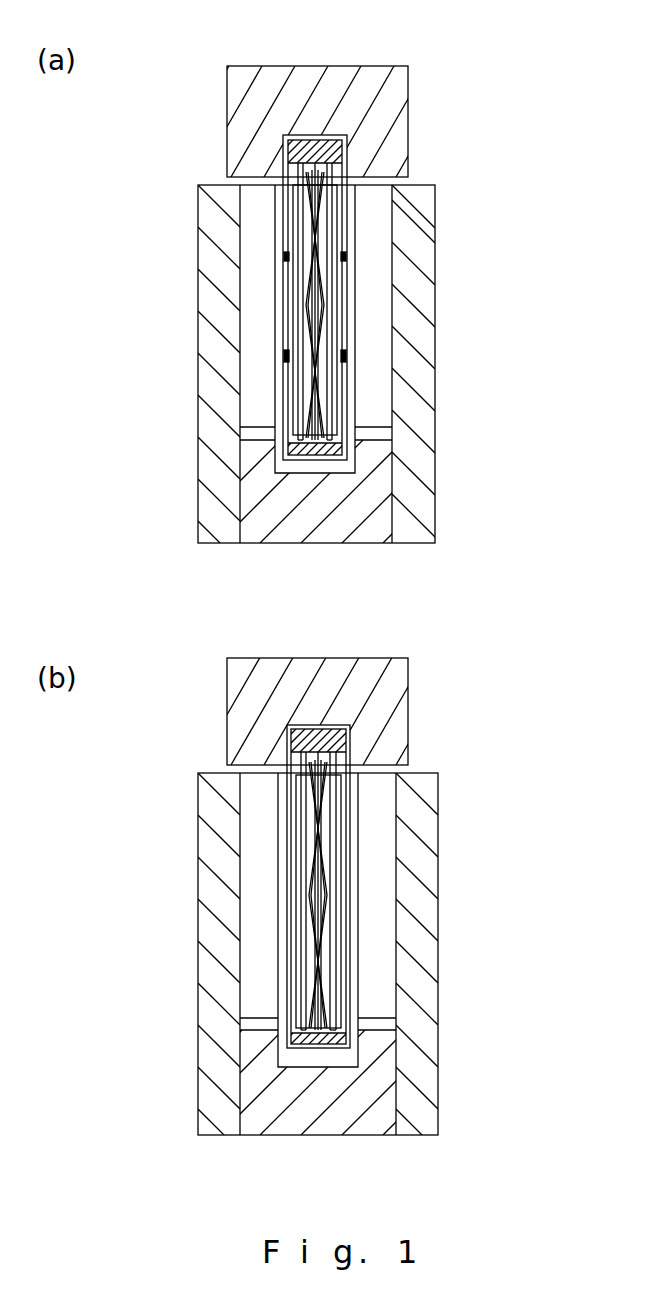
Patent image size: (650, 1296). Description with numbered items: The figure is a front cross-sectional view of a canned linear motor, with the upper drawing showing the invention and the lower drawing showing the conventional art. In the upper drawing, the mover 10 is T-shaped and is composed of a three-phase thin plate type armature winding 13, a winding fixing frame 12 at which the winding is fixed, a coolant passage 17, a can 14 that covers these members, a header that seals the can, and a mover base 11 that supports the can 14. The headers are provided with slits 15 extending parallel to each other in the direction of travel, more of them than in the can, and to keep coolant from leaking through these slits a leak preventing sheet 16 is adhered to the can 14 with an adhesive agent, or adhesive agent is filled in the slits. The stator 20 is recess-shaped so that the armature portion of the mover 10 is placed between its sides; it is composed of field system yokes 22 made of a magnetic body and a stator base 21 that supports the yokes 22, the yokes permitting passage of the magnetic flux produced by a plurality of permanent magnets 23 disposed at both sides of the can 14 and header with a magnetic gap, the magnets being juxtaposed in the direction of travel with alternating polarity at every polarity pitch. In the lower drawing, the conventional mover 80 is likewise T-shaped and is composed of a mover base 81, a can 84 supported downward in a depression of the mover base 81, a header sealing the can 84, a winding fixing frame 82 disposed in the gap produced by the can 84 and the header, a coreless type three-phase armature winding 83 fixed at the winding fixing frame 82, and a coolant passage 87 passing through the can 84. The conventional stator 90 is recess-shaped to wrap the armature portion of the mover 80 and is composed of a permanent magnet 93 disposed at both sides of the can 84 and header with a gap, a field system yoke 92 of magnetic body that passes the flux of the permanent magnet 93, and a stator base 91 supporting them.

The mover 10 is at (432, 98).
The mover base 11 is at (237, 116).
The winding fixing frame 12 is at (337, 150).
The three-phase thin plate type armature winding 13 is at (300, 216).
The can 14 is at (345, 210).
The slits 15 is at (343, 258).
The leak preventing sheet 16 is at (335, 325).
The coolant passage 17 is at (337, 378).
The stator 20 is at (460, 503).
The stator base 21 is at (255, 483).
The field system yokes 22 is at (213, 398).
The permanent magnets 23 is at (252, 334).
The mover 80 is at (431, 699).
The mover base 81 is at (227, 697).
The winding fixing frame 82 is at (337, 745).
The coreless type three-phase armature winding 83 is at (300, 800).
The can 84 is at (345, 797).
The coolant passage 87 is at (338, 925).
The stator 90 is at (460, 1073).
The stator base 91 is at (255, 1075).
The field system yoke 92 is at (225, 985).
The permanent magnet 93 is at (255, 930).